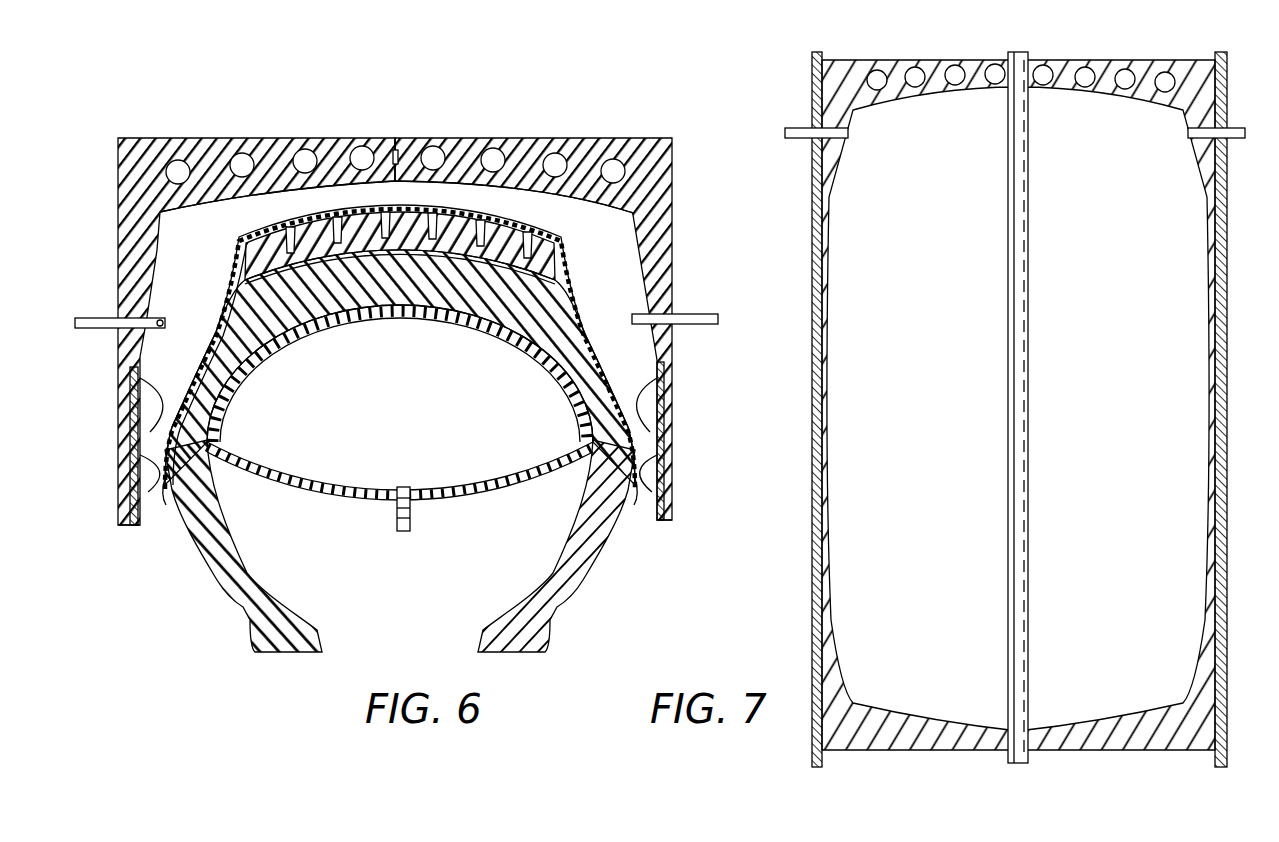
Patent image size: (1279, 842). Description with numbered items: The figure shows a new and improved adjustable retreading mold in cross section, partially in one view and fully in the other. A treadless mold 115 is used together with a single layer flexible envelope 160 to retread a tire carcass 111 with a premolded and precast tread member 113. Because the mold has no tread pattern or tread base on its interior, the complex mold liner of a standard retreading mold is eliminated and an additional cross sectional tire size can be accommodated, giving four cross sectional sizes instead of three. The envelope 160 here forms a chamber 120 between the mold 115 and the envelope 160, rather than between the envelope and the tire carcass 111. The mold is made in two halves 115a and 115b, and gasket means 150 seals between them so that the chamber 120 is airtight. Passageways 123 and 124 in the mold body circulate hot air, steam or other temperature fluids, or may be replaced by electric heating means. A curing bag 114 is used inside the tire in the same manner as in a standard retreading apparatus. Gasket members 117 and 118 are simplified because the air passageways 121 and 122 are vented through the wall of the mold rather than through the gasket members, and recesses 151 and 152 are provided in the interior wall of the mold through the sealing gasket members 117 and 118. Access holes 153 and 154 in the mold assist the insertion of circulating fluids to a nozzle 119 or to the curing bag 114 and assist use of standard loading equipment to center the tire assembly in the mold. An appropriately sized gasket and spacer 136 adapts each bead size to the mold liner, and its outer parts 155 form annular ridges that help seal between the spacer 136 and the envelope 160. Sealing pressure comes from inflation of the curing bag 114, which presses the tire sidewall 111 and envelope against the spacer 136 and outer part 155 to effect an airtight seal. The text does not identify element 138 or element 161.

In FIG. 6, the tire carcass 111 is at (565, 333).
In FIG. 6, the tread member 113 is at (560, 257).
In FIG. 6, the curing bag 114 is at (335, 492).
In FIG. 6, the treadless mold 115 is at (421, 314).
In FIG. 7, the treadless mold 115 is at (1018, 406).
In FIG. 6, the mold half 115a is at (247, 137).
In FIG. 7, the mold half 115a is at (986, 762).
In FIG. 6, the mold half 115b is at (567, 150).
In FIG. 7, the mold half 115b is at (1100, 742).
In FIG. 6, the gasket member 117 is at (128, 527).
In FIG. 6, the gasket member 118 is at (656, 522).
In FIG. 6, the nozzle 119 is at (401, 532).
In FIG. 6, the chamber 120 is at (172, 253).
In FIG. 6, the air passageway 121 is at (95, 330).
In FIG. 7, the air passageway 121 is at (797, 126).
In FIG. 6, the air passageway 122 is at (725, 321).
In FIG. 7, the air passageway 122 is at (1232, 139).
In FIG. 6, the passageway 123 is at (256, 160).
In FIG. 6, the passageway 124 is at (440, 153).
In FIG. 6, the gasket and spacer 136 is at (150, 403).
In FIG. 6, the lower sealing flap 138 is at (135, 487).
In FIG. 6, the gasket means 150 is at (398, 138).
In FIG. 7, the gasket means 150 is at (1020, 55).
In FIG. 6, the recess 151 is at (130, 376).
In FIG. 6, the recess 152 is at (661, 377).
In FIG. 7, the access hole 153 is at (812, 489).
In FIG. 7, the access hole 154 is at (1222, 471).
In FIG. 6, the outer part of spacer 155 is at (170, 400).
In FIG. 6, the flexible envelope 160 is at (232, 274).
In FIG. 6, the inner liner layer 161 is at (223, 310).